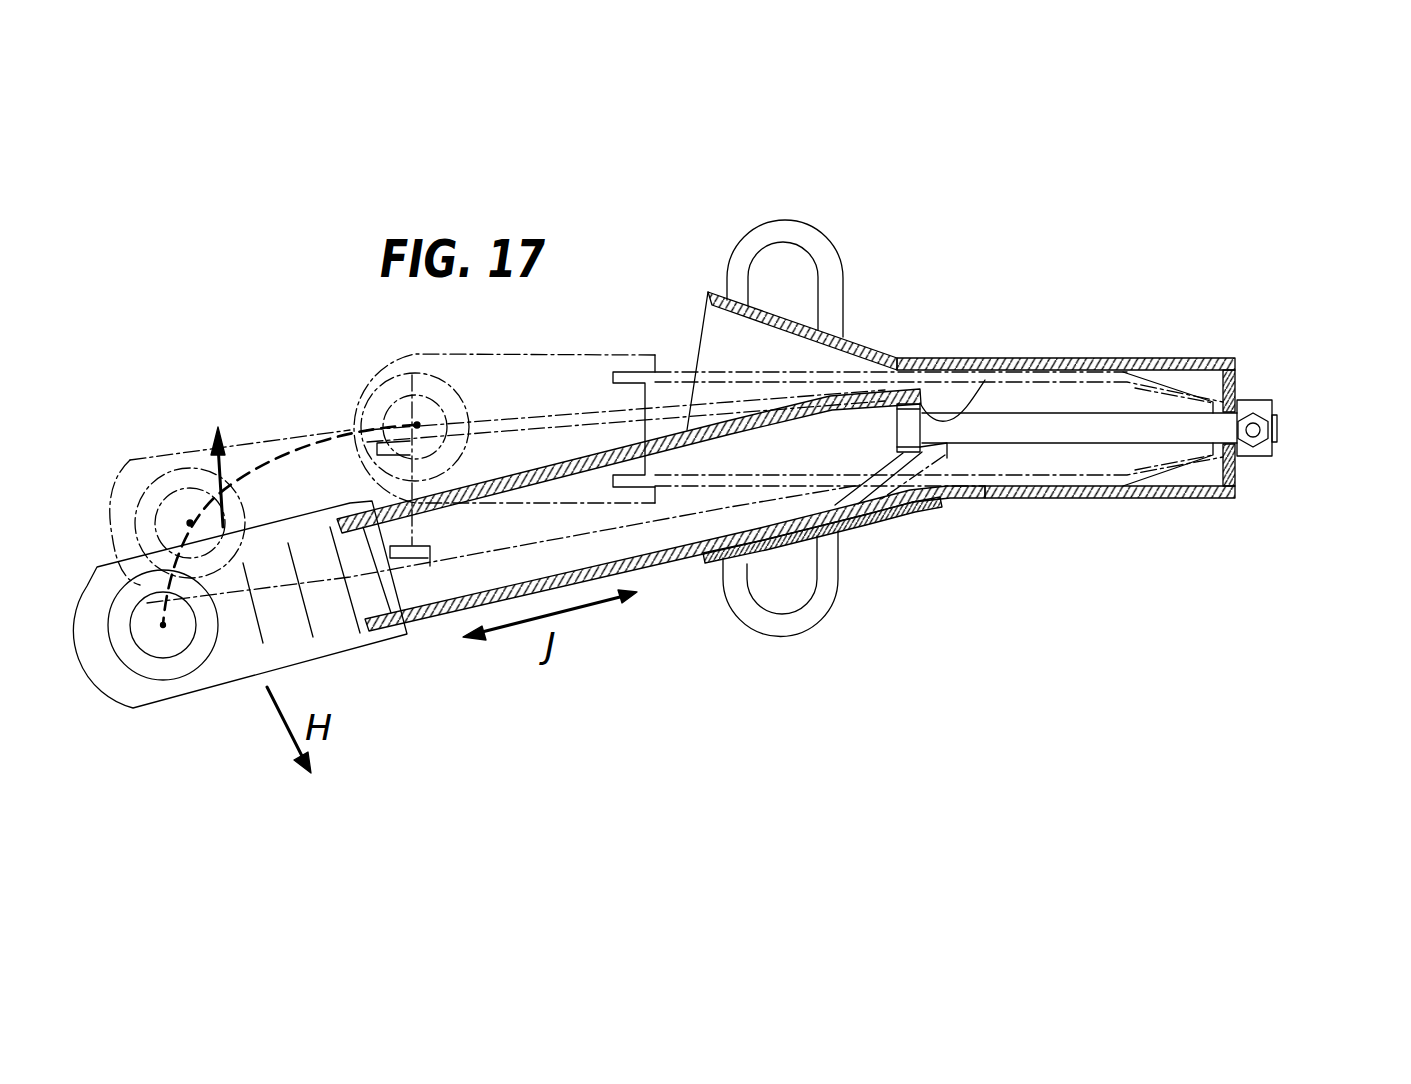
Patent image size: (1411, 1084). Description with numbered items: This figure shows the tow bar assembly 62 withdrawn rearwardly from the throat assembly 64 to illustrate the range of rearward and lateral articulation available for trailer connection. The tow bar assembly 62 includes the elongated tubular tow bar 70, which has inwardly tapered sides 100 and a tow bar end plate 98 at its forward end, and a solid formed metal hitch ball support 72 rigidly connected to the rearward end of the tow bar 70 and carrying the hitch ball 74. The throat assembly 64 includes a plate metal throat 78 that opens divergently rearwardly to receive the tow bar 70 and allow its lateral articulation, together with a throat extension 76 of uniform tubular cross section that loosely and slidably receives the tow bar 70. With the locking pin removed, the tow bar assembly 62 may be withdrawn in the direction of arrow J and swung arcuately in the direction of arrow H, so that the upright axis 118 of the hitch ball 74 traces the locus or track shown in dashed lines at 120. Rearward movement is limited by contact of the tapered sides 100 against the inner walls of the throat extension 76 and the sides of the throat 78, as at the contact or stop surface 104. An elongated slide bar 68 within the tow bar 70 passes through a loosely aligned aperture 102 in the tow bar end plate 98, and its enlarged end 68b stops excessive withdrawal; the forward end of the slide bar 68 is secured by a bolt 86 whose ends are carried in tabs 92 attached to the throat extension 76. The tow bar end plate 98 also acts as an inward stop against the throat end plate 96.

The tow bar assembly 62 is at (387, 652).
The throat assembly 64 is at (850, 527).
The slide bar 68 is at (1100, 445).
The enlarged end of the slide bar 68b is at (904, 453).
The tow bar 70 is at (673, 557).
The hitch ball support 72 is at (225, 688).
The hitch ball 74 is at (154, 680).
The throat extension 76 is at (1107, 358).
The throat 78 is at (860, 337).
The bolt 86 is at (1266, 418).
The tabs 92 is at (1257, 460).
The throat end plate 96 is at (1237, 385).
The tow bar end plate 98 is at (1237, 473).
The inwardly tapered sides 100 is at (889, 403).
The aperture 102 is at (985, 380).
The contact or stop surface 104 is at (805, 522).
The upright axis of the hitch ball 118 is at (162, 624).
The locus or track of the upright axis 120 is at (262, 453).